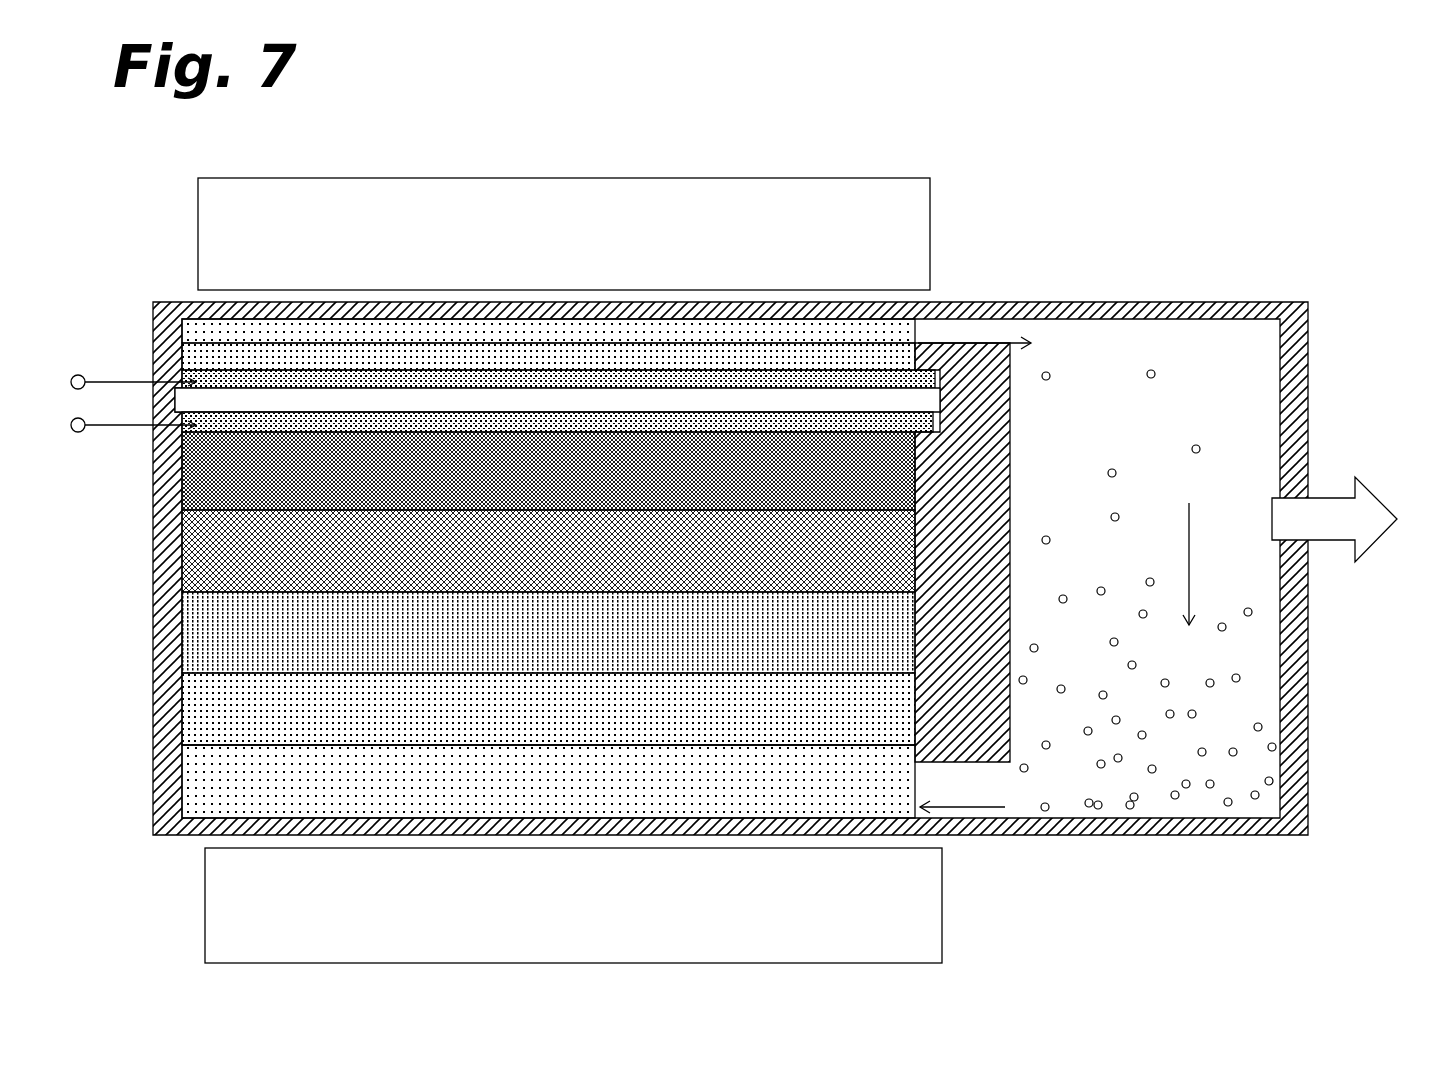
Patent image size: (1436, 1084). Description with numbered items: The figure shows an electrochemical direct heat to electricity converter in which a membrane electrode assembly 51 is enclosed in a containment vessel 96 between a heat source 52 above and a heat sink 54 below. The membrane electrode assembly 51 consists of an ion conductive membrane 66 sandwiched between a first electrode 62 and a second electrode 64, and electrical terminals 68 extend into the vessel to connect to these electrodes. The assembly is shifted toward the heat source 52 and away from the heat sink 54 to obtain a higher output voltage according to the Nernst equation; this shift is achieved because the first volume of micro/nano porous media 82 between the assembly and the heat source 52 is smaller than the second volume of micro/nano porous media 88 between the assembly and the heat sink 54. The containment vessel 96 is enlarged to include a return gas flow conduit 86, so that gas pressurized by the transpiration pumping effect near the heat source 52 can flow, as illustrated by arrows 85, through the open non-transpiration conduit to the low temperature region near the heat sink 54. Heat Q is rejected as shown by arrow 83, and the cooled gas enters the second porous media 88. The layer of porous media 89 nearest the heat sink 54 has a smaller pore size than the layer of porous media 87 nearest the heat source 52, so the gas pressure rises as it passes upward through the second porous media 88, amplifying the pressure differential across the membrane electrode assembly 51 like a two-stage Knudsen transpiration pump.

The membrane electrode assembly 51 is at (223, 383).
The heat source 52 is at (890, 178).
The heat sink 54 is at (205, 893).
The first electrode 62 is at (797, 378).
The second electrode 64 is at (880, 432).
The ion conductive membrane 66 is at (908, 402).
The electrical terminals 68 is at (119, 438).
The first volume of micro/nano porous media 82 is at (900, 332).
The arrow illustrating heat rejection Q 83 is at (1365, 560).
The arrows illustrating gas flow 85 is at (978, 334).
The return gas flow conduit 86 is at (1241, 346).
The layer of micro/nano porous media 87 is at (198, 335).
The second volume of micro/nano porous media 88 is at (862, 808).
The layer of micro/nano porous media 89 is at (255, 771).
The containment vessel 96 is at (1307, 748).